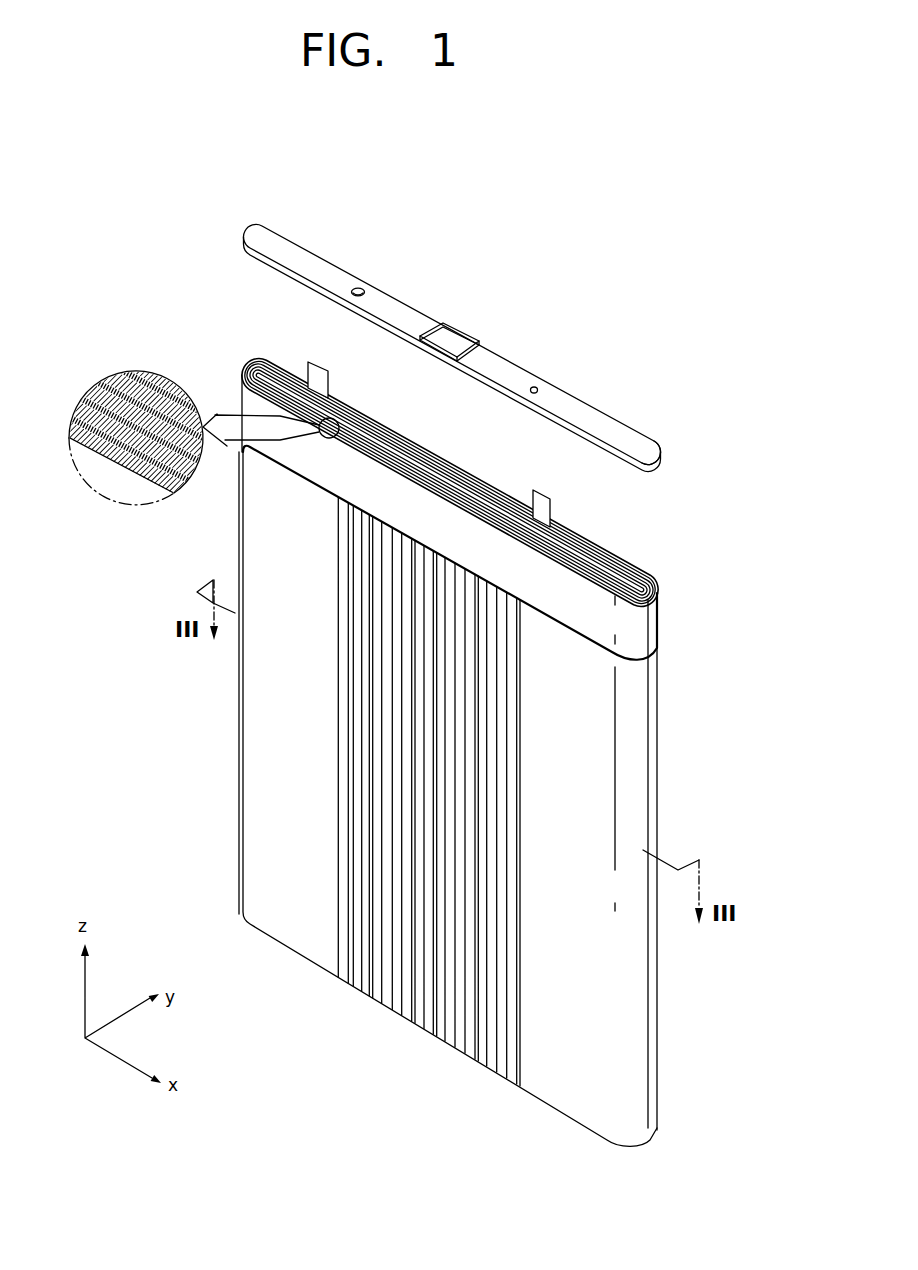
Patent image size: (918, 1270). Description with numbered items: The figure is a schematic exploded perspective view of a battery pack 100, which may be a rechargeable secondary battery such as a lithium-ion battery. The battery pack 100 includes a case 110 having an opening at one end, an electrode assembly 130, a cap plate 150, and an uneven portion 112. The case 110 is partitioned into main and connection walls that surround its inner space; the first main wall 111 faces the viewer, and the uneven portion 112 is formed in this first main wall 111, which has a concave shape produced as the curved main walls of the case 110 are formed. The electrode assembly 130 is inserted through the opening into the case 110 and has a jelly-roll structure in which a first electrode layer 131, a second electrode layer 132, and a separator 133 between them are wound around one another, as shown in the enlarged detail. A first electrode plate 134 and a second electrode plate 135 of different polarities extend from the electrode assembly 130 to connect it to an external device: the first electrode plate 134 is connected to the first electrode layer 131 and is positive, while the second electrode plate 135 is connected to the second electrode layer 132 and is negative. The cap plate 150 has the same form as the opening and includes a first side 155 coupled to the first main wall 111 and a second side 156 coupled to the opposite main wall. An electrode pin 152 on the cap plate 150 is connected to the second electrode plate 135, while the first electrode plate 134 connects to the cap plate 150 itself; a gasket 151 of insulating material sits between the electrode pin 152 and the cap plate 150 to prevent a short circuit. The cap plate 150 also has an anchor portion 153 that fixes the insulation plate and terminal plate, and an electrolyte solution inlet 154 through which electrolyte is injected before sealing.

The battery pack 100 is at (597, 226).
The case 110 is at (230, 688).
The first main wall 111 is at (278, 778).
The uneven portion 112 is at (362, 932).
The electrode assembly 130 is at (650, 614).
The first electrode layer 131 is at (124, 455).
The second electrode layer 132 is at (84, 437).
The separator 133 is at (162, 474).
The first electrode plate 134 is at (312, 362).
The second electrode plate 135 is at (550, 505).
The cap plate 150 is at (300, 246).
The gasket 151 is at (478, 342).
The electrode pin 152 is at (452, 328).
The anchor portion 153 is at (537, 386).
The electrolyte solution inlet 154 is at (360, 288).
The first side 155 is at (481, 386).
The second side 156 is at (598, 411).